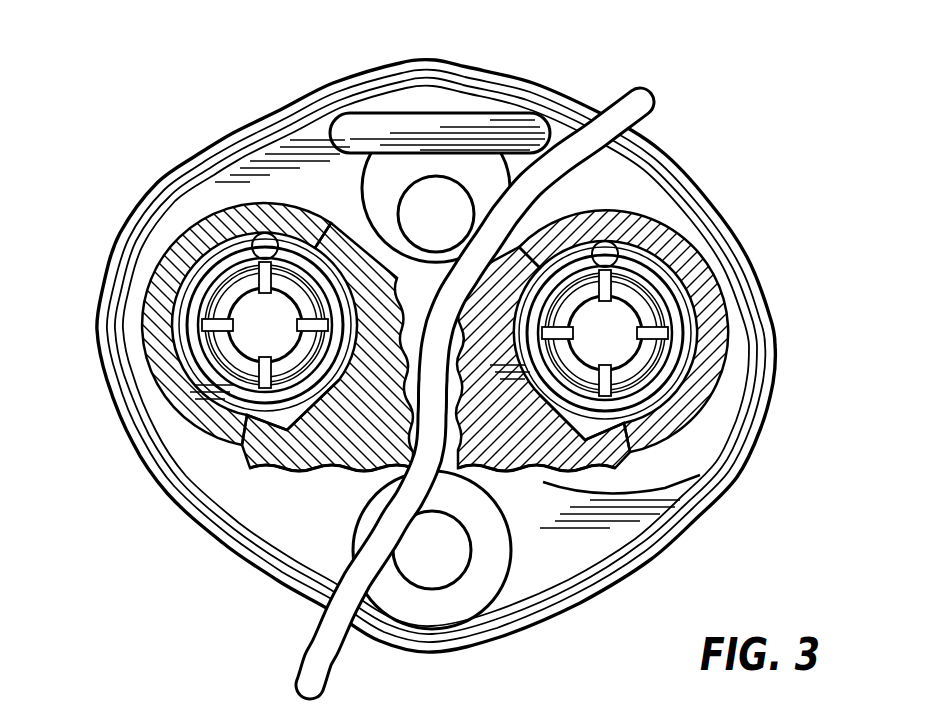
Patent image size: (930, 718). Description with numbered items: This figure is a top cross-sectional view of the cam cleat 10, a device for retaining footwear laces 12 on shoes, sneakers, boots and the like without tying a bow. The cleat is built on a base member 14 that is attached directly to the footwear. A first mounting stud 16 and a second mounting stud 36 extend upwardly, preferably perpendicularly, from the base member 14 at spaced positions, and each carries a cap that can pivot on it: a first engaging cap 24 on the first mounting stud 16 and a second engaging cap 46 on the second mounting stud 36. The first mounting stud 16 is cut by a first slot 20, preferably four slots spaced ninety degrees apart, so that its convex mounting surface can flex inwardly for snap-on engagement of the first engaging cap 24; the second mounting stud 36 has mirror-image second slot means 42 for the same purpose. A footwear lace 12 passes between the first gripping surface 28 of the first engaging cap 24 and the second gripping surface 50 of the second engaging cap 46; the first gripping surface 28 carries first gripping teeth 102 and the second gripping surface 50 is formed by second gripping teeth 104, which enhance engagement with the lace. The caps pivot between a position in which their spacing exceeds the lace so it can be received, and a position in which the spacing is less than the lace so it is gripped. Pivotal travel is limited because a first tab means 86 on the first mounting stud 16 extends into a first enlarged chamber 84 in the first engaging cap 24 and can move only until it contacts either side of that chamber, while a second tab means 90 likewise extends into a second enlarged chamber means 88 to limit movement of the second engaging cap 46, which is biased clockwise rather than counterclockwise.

The cam cleat 10 is at (335, 60).
The footwear lace 12 is at (605, 118).
The base member 14 is at (327, 200).
The first mounting stud 16 is at (223, 283).
The first slot 20 is at (218, 327).
The first engaging cap 24 is at (218, 212).
The first gripping surface 28 is at (283, 423).
The second mounting stud 36 is at (643, 272).
The second slot means 42 is at (660, 337).
The second engaging cap 46 is at (655, 335).
The second gripping surface 50 is at (545, 505).
The first enlarged chamber 84 is at (337, 478).
The first tab means 86 is at (303, 433).
The second enlarged chamber means 88 is at (672, 497).
The second tab means 90 is at (565, 430).
The first gripping teeth 102 is at (507, 477).
The second gripping teeth 104 is at (505, 255).